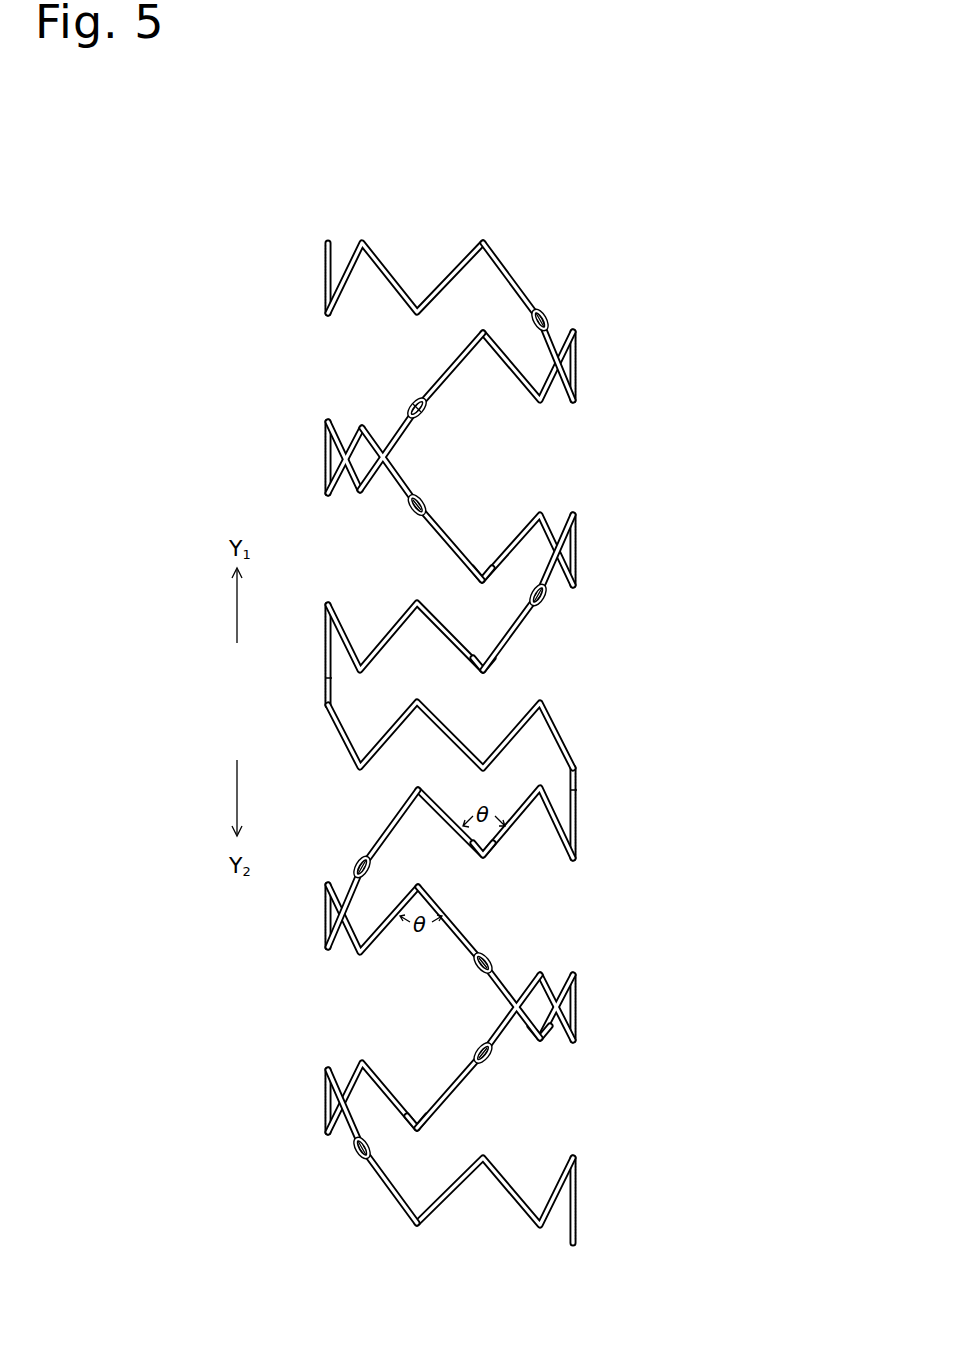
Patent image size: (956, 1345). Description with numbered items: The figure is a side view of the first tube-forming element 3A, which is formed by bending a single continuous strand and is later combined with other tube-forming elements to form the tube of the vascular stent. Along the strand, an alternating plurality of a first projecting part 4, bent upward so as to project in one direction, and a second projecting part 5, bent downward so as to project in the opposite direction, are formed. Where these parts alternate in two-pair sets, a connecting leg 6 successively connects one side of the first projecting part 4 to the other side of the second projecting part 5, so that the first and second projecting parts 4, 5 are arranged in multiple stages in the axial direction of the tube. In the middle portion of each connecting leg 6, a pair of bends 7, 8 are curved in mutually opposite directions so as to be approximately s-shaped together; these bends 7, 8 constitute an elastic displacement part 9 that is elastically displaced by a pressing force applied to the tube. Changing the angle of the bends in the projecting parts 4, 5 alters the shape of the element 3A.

The first tube-forming element 3A is at (485, 722).
The first projecting part 4 is at (480, 333).
The second projecting part 5 is at (478, 583).
The connecting leg 6 is at (447, 370).
The bend 7 is at (427, 410).
The bend 8 is at (410, 410).
The elastic displacement part 9 is at (500, 734).